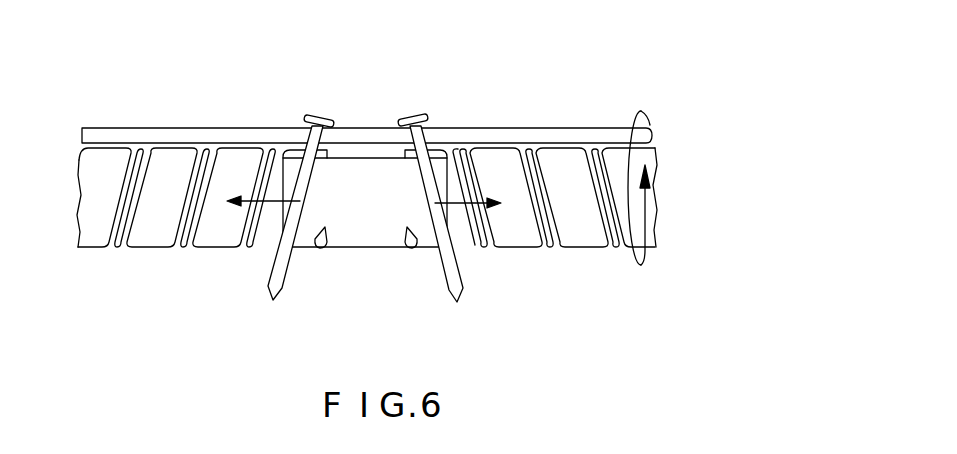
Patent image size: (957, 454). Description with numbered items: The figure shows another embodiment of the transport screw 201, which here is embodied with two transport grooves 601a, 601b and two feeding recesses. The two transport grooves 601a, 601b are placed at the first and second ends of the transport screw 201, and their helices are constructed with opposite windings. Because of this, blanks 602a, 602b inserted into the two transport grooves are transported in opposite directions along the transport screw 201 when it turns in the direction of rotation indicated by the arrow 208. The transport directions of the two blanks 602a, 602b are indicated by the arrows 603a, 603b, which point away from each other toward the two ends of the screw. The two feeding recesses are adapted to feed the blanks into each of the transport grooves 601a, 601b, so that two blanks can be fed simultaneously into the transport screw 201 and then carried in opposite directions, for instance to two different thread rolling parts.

The transport screw 201 is at (681, 207).
The arrow 208 is at (639, 111).
The transport groove 601a is at (199, 190).
The transport groove 601b is at (535, 185).
The blank 602a is at (321, 117).
The blank 602b is at (420, 114).
The arrow 603a is at (237, 204).
The arrow 603b is at (495, 205).